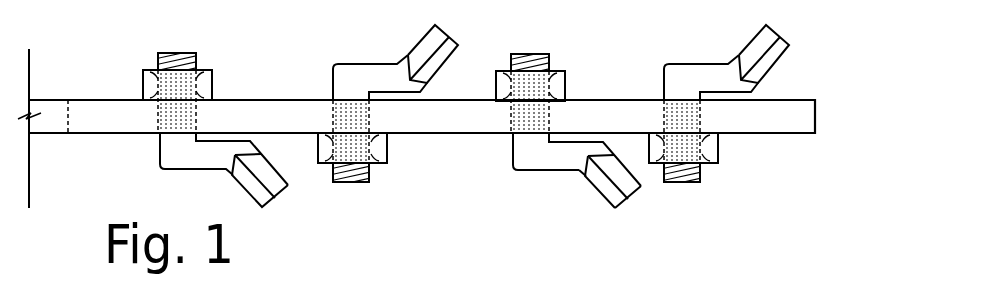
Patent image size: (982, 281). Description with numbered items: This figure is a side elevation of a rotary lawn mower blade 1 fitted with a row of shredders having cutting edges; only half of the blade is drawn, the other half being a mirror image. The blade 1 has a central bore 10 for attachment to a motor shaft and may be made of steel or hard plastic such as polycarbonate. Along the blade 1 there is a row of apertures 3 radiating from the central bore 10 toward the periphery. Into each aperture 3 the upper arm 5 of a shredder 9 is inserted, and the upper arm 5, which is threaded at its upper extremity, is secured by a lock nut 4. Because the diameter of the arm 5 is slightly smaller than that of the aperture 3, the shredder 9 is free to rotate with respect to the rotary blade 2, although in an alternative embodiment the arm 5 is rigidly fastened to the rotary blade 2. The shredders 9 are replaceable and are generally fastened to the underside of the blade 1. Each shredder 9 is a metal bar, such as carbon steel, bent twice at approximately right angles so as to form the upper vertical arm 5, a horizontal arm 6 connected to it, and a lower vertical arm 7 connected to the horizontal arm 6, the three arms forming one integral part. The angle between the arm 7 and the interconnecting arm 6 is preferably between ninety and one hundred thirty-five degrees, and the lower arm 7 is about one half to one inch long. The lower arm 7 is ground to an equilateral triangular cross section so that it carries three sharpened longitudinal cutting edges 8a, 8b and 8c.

The rotary lawn mower blade 1 is at (750, 106).
The rotary blade 2 is at (810, 115).
The aperture 3 is at (700, 117).
The lock nut 4 is at (496, 72).
The upper arm 5 is at (542, 53).
The horizontal arm 6 is at (523, 171).
The lower arm 7 is at (580, 173).
The cutting edge 8a is at (619, 199).
The cutting edge 8b is at (603, 194).
The cutting edge 8c is at (638, 180).
The shredder 9 is at (510, 153).
The central bore 10 is at (42, 100).